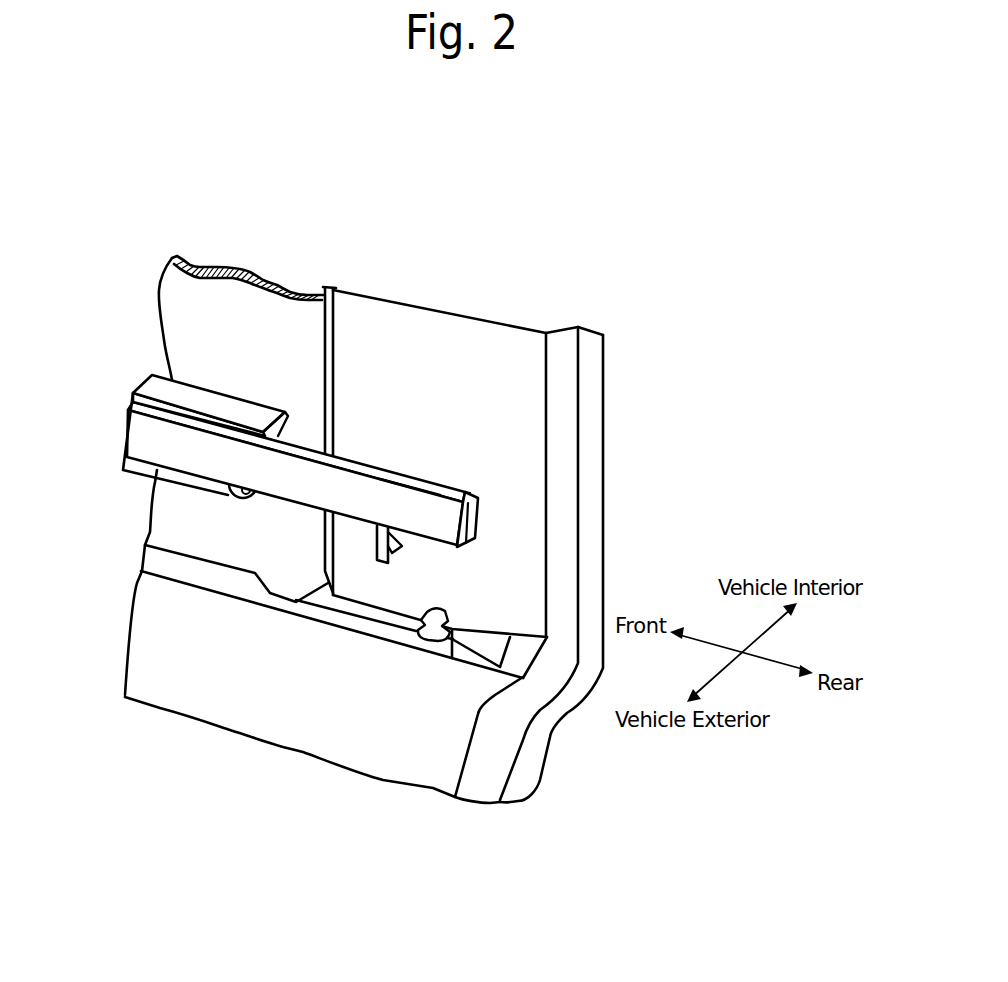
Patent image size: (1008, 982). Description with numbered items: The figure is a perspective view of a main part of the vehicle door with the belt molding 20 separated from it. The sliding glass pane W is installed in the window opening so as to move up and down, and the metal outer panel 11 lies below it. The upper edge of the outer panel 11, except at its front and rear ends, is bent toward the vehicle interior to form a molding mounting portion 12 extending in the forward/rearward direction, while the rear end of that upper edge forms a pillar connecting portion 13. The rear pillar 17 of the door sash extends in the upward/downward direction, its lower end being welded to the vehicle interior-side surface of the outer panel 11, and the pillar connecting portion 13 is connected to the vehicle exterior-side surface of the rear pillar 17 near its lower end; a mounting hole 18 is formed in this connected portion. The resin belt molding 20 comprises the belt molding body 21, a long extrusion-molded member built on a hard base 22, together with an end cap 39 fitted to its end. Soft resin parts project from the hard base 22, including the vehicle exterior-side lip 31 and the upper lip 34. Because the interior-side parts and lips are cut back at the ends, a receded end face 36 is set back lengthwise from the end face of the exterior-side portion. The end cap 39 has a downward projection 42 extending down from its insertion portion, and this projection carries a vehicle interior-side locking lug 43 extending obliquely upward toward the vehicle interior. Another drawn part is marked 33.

The sliding glass pane W is at (180, 307).
The outer panel 11 is at (310, 727).
The molding mounting portion 12 is at (183, 565).
The pillar connecting portion 13 is at (363, 622).
The rear pillar 17 is at (520, 402).
The mounting hole 18 is at (423, 641).
The belt molding 20 is at (376, 451).
The belt molding body 21 is at (433, 483).
The hard base 22 is at (146, 431).
The vehicle exterior-side lip 31 is at (200, 489).
The guide bar 33 is at (143, 438).
The upper lip 34 is at (213, 387).
The receded end face 36 is at (282, 407).
The end cap 39 is at (473, 521).
The downward projection 42 is at (378, 537).
The vehicle interior-side locking lug 43 is at (400, 548).